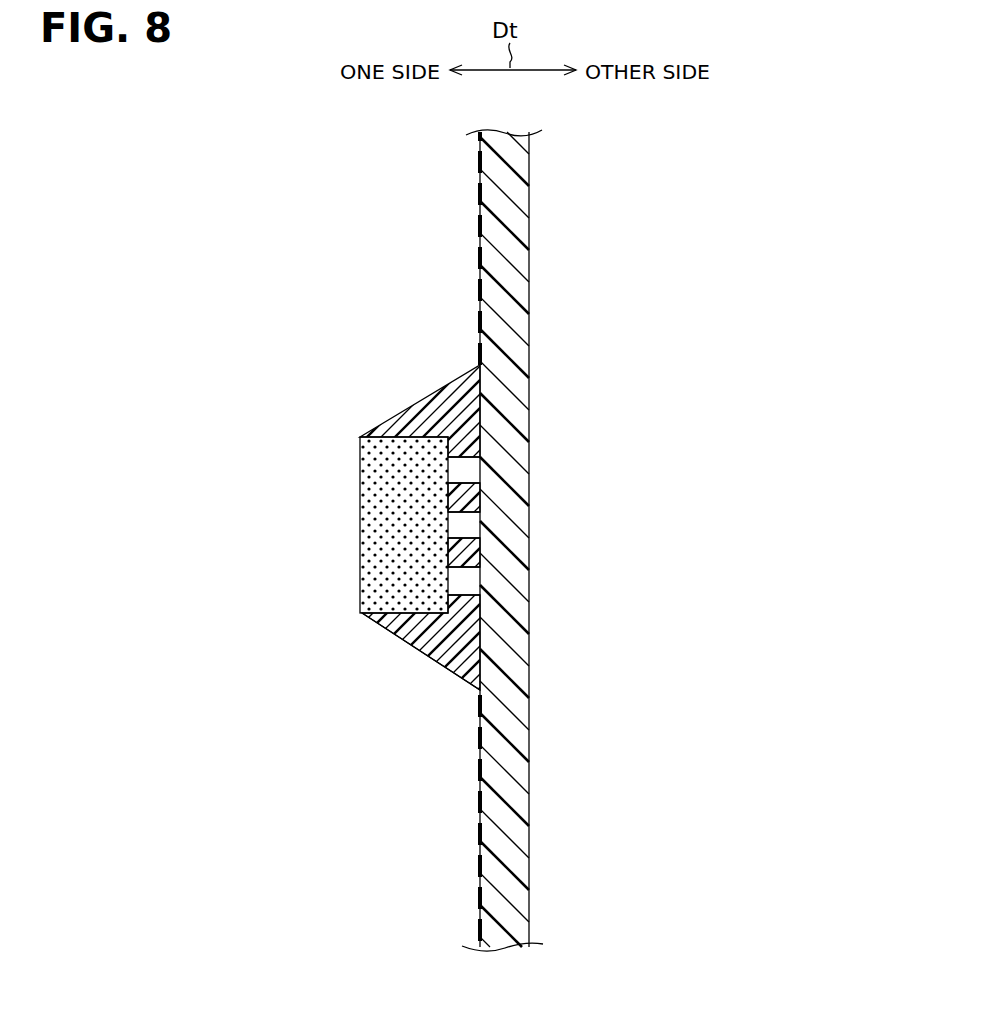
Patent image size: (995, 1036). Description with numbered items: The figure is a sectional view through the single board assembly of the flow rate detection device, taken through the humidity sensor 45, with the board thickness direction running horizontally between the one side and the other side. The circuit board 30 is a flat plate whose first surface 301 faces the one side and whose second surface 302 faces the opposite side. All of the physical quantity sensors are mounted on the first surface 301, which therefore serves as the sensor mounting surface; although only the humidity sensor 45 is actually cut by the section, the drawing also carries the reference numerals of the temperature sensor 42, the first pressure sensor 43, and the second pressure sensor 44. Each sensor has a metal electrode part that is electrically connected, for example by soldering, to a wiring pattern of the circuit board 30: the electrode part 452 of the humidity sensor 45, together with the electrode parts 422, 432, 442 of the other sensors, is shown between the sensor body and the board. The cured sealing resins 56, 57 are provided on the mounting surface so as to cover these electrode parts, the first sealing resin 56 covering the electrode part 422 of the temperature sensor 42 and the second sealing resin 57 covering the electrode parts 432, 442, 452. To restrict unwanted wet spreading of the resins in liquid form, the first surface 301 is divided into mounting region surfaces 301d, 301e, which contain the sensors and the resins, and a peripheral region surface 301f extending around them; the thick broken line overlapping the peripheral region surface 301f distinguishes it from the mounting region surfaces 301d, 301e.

The circuit board 30 is at (496, 540).
The first surface 301 is at (470, 163).
The peripheral region surface 301f is at (480, 231).
The second surface 302 is at (528, 871).
The mounting region surface 301d is at (340, 651).
The mounting region surface 301e is at (477, 633).
The first sealing resin 56 is at (434, 510).
The second sealing resin 57 is at (445, 400).
The humidity sensor 45 is at (266, 525).
The temperature sensor 42 is at (404, 525).
The first pressure sensor 43 is at (404, 525).
The second pressure sensor 44 is at (350, 467).
The electrode part 452 is at (654, 539).
The electrode part 422 is at (464, 526).
The electrode part 432 is at (464, 526).
The electrode part 442 is at (465, 473).